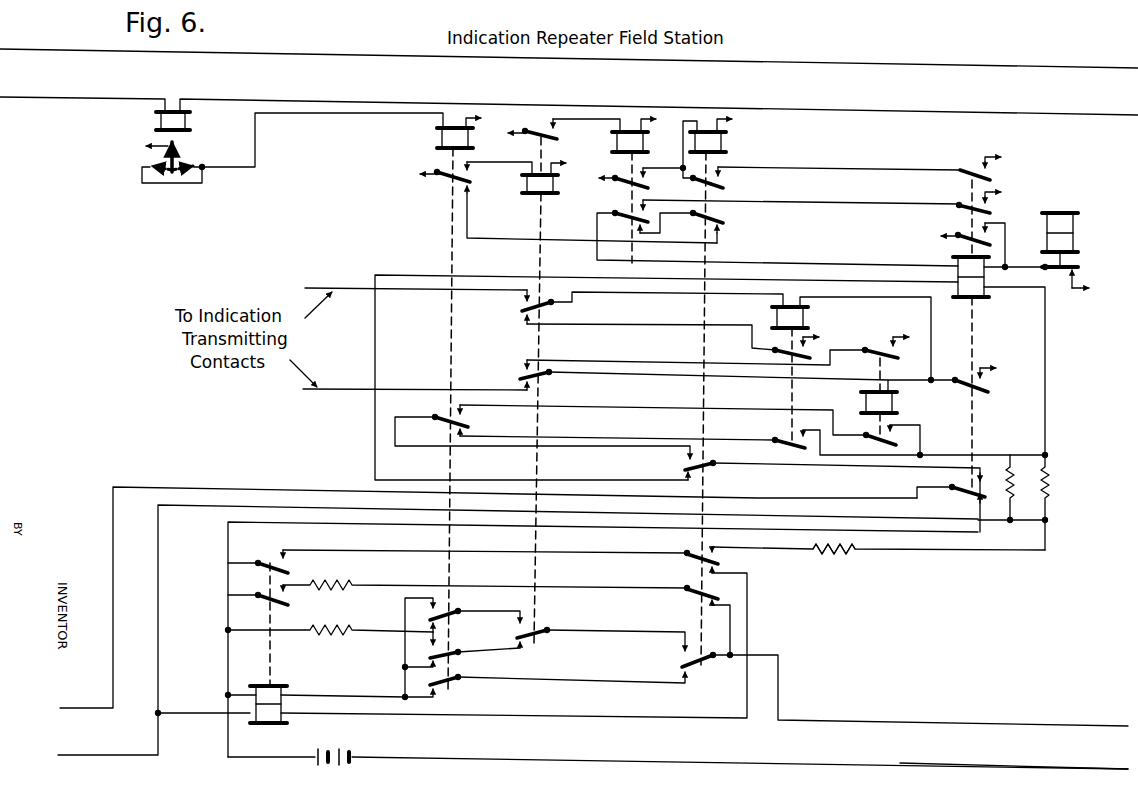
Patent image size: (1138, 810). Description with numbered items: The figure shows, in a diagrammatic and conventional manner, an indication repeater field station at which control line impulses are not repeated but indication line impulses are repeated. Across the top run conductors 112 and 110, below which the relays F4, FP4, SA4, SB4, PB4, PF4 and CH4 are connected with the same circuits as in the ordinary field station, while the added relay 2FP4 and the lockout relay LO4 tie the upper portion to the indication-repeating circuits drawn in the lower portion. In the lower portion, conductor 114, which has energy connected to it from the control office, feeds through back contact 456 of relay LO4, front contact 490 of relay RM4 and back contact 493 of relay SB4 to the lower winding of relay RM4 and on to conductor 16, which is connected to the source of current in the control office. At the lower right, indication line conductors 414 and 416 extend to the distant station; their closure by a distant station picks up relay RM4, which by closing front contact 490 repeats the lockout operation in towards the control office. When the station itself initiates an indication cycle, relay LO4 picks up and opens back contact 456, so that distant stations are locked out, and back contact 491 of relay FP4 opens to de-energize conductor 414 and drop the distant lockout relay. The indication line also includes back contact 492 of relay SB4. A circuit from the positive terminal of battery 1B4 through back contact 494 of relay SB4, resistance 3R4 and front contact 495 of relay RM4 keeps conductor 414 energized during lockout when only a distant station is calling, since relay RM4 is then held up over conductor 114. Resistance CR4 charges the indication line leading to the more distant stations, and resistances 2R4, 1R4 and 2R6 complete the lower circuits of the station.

The conductor 112 is at (1106, 68).
The conductor 110 is at (1106, 116).
The conductor 114 is at (61, 712).
The conductor 16 is at (61, 758).
The indication line conductor 414 is at (1086, 727).
The indication line conductor 416 is at (1086, 771).
The back contact of relay LO4 456 is at (951, 492).
The front contact of relay RM4 490 is at (258, 565).
The back contact of relay FP4 491 is at (447, 682).
The back contact of relay SB4 492 is at (697, 663).
The back contact of relay SB4 493 is at (689, 561).
The back contact of relay SB4 494 is at (689, 597).
The front contact of relay RM4 495 is at (262, 601).
The F relay F4 is at (188, 123).
The FP relay FP4 is at (583, 401).
The 2FP relay 2FP4 is at (629, 381).
The SA relay SA4 is at (768, 189).
The SB relay SB4 is at (677, 388).
The lockout relay LO4 is at (958, 263).
The CH relay CH4 is at (1069, 213).
The PB relay PB4 is at (803, 318).
The PF relay PF4 is at (892, 402).
The RM relay RM4 is at (276, 688).
The resistance 2R4 is at (1022, 489).
The resistance 1R4 is at (1027, 502).
The resistance 3R4 is at (485, 575).
The resistance CR4 is at (330, 627).
The resistance 2R6 is at (837, 560).
The battery 1B4 is at (333, 752).